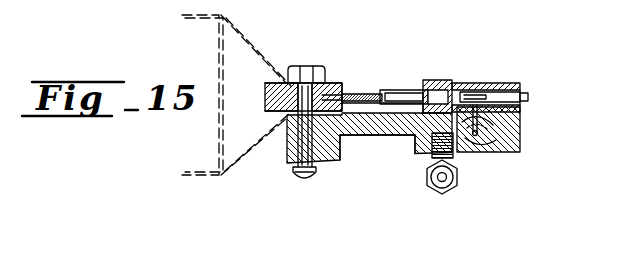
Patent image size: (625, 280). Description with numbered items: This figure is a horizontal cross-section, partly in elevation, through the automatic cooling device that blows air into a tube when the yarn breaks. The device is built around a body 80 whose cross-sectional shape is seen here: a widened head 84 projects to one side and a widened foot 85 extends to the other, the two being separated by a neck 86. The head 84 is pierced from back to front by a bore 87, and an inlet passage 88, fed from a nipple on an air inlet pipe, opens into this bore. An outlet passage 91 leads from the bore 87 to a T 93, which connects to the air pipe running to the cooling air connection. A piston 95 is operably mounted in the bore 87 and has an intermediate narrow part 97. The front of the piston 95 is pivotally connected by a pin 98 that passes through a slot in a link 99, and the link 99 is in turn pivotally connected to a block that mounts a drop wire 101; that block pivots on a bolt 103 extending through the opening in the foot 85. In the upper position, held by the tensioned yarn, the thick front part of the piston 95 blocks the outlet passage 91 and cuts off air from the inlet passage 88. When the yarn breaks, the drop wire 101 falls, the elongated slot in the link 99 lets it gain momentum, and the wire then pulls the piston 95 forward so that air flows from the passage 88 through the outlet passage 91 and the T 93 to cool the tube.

The body 80 is at (376, 137).
The head 84 is at (521, 136).
The foot 85 is at (296, 153).
The neck 86 is at (388, 150).
The bore 87 is at (510, 84).
The inlet passage 88 is at (492, 142).
The outlet passage 91 is at (418, 150).
The T 93 is at (455, 150).
The piston 95 is at (437, 90).
The intermediate narrow part 97 is at (473, 90).
The pin 98 is at (412, 90).
The link 99 is at (370, 94).
The drop wire 101 is at (198, 176).
The bolt 103 is at (330, 162).